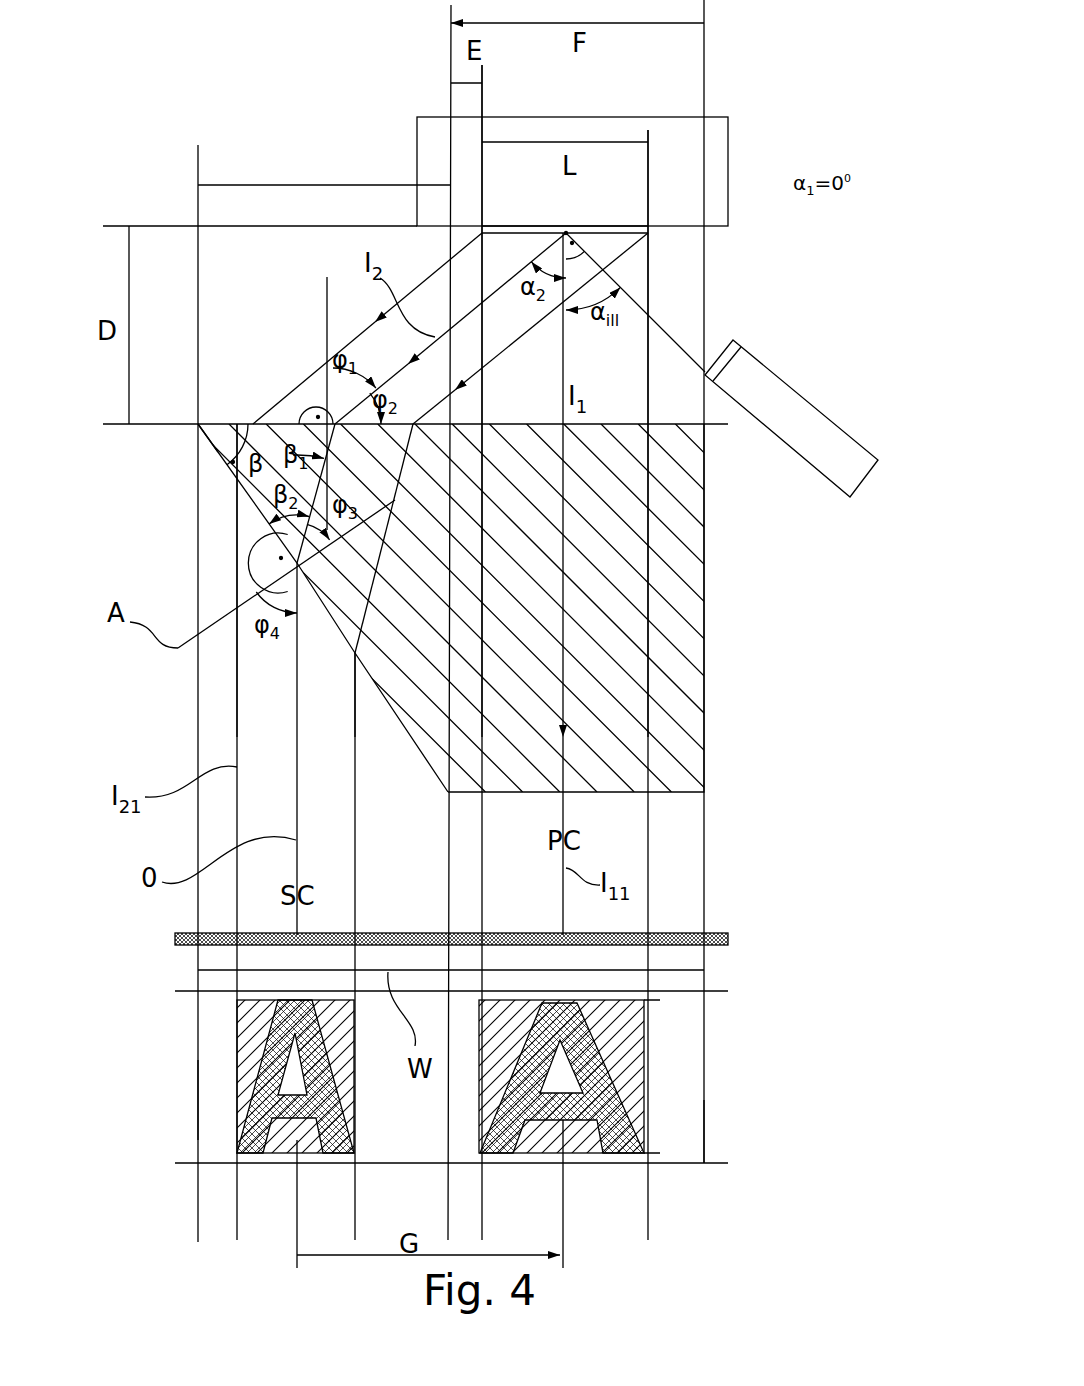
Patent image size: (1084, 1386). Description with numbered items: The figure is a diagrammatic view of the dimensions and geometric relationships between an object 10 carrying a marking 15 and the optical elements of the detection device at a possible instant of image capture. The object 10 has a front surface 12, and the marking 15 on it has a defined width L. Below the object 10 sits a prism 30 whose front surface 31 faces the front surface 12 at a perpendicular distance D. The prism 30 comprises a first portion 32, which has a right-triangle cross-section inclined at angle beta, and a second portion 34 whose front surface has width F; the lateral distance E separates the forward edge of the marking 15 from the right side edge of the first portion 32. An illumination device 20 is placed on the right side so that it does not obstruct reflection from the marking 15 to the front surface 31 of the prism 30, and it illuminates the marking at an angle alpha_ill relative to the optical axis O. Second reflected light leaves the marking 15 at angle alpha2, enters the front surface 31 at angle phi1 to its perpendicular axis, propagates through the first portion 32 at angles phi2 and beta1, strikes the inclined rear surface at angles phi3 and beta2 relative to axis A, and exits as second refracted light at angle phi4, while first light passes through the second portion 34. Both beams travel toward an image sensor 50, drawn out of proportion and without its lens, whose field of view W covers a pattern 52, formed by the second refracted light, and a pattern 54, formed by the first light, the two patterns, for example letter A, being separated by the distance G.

The object 10 is at (716, 158).
The front surface of object 12 is at (682, 230).
The marking 15 is at (567, 232).
The illumination device 20 is at (835, 445).
The prism 30 is at (575, 556).
The front surface of prism 31 is at (218, 423).
The first portion of prism 32 is at (360, 612).
The second portion of prism 34 is at (690, 615).
The image sensor 50 is at (735, 940).
The pattern 52 is at (245, 1137).
The pattern 54 is at (500, 1155).